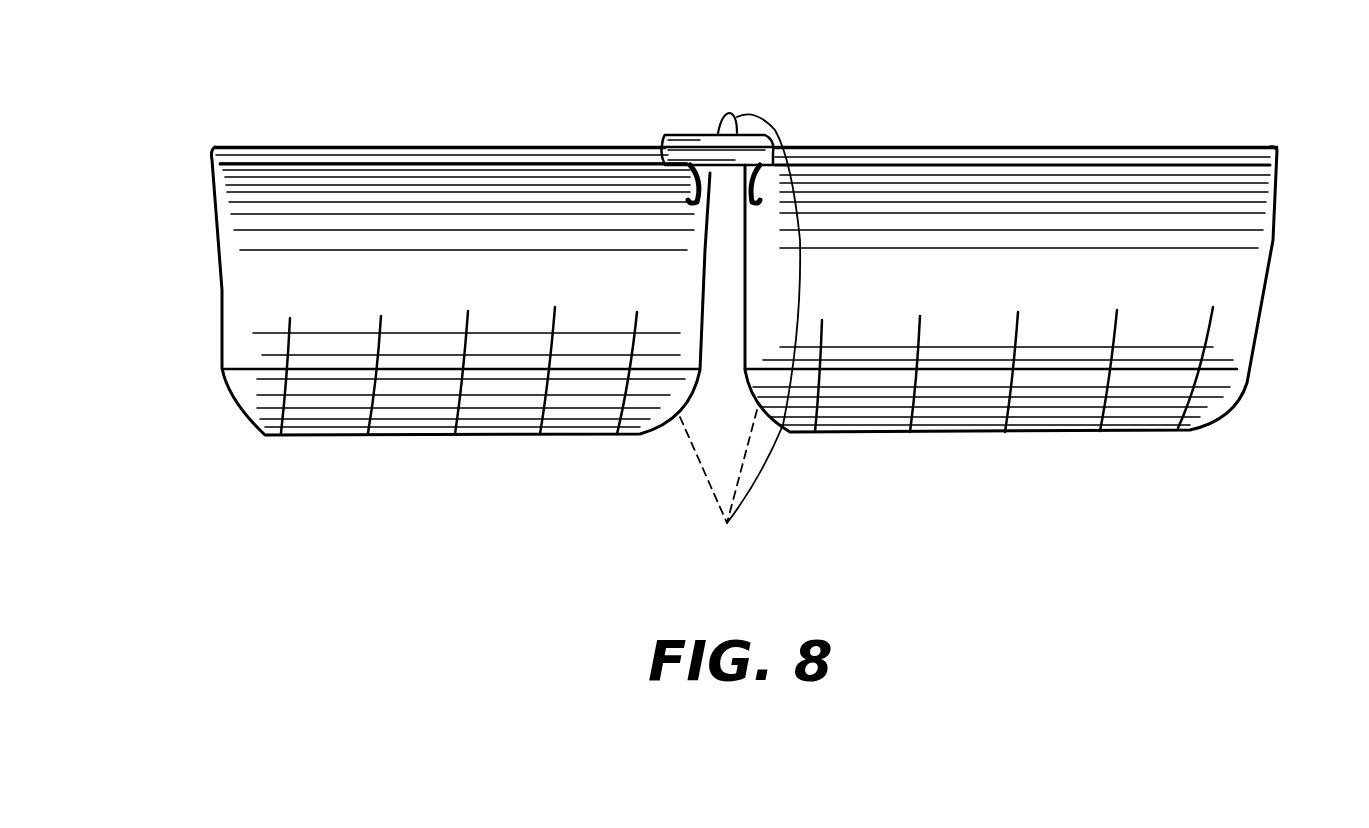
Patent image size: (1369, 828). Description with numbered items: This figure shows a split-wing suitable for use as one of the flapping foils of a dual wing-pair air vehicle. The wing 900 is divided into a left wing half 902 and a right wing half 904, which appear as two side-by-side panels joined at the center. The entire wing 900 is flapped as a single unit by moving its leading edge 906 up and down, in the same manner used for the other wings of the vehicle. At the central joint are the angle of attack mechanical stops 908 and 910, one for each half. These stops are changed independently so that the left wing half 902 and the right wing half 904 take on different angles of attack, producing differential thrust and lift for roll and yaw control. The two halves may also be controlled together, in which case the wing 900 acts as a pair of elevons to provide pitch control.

The wing 900 is at (338, 492).
The left wing half 902 is at (240, 298).
The right wing half 904 is at (1248, 292).
The leading edge 906 is at (962, 147).
The angle of attack mechanical stop 908 is at (677, 178).
The angle of attack mechanical stop 910 is at (800, 240).